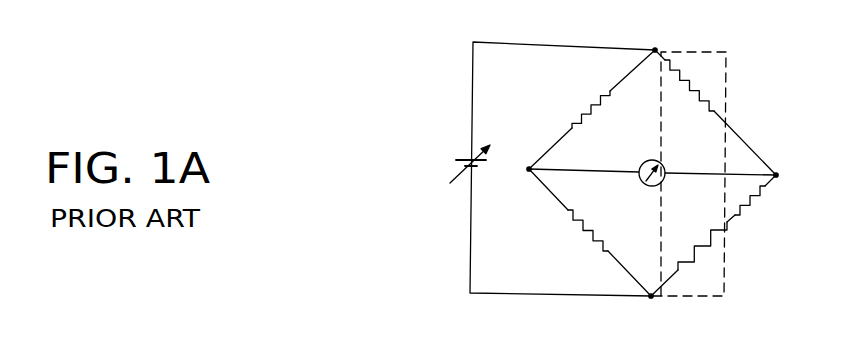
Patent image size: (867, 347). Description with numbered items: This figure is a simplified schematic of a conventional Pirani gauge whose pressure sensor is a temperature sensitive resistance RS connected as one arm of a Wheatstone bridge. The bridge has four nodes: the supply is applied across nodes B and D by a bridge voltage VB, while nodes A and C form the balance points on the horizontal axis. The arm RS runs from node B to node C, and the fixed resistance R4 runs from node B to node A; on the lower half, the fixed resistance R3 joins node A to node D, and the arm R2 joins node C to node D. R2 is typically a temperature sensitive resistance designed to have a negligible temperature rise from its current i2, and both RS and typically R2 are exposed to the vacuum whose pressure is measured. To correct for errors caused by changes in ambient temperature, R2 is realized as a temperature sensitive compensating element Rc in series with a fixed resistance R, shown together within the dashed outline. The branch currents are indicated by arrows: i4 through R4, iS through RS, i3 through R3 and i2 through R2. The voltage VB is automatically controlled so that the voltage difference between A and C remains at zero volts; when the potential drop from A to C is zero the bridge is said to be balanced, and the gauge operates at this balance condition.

The bridge node A is at (514, 172).
The bridge node B is at (654, 28).
The bridge node C is at (793, 175).
The bridge node D is at (653, 315).
The bridge voltage VB is at (451, 167).
The fixed resistance R4 is at (582, 106).
The temperature sensitive resistance RS is at (690, 84).
The fixed resistance R is at (748, 199).
The temperature sensitive compensating element Rc is at (695, 246).
The temperature sensitive resistance R2 is at (743, 246).
The fixed resistance R3 is at (579, 233).
The current through R4 i4 is at (613, 105).
The current through RS iS is at (677, 90).
The current through R3 i3 is at (585, 210).
The current through R2 i2 is at (718, 213).